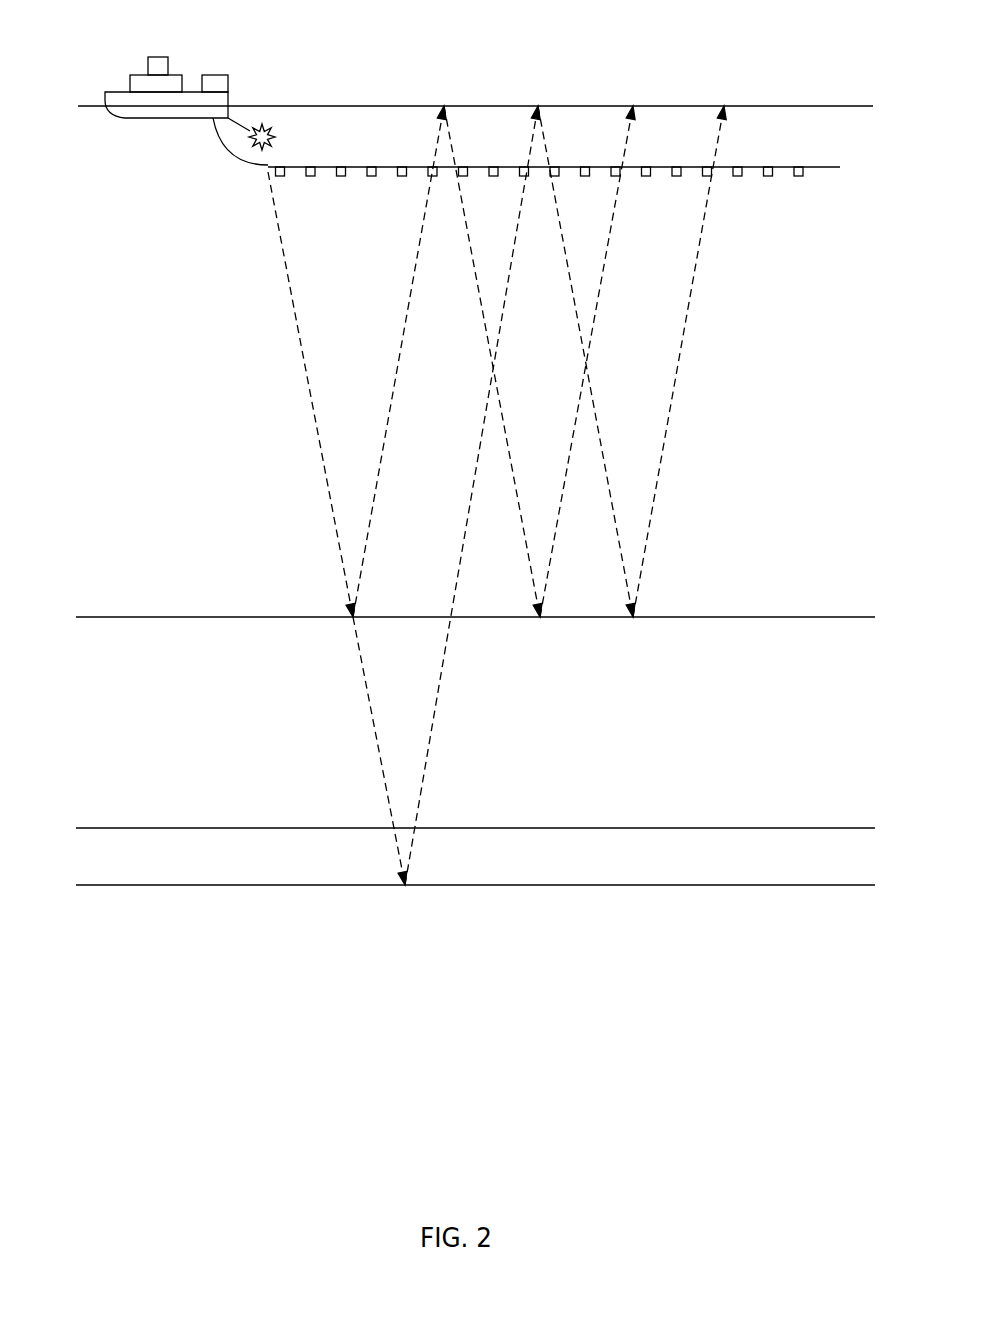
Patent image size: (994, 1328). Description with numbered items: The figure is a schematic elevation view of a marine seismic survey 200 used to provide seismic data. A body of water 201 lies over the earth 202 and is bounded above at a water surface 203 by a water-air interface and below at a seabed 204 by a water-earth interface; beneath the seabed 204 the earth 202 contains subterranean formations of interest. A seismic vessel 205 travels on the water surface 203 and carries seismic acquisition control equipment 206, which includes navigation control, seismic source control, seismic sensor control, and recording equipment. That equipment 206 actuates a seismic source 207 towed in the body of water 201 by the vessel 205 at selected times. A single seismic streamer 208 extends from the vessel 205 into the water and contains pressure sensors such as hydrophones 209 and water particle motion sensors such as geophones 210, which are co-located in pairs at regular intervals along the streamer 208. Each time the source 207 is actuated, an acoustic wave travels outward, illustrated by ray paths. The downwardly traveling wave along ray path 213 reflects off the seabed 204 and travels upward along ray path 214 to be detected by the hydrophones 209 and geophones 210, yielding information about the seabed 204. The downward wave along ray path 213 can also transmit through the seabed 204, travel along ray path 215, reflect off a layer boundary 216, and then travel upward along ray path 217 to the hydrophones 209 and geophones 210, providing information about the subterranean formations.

The marine seismic survey 200 is at (762, 52).
The body of water 201 is at (183, 390).
The earth 202 is at (188, 691).
The water surface 203 is at (568, 106).
The seabed 204 is at (168, 617).
The seismic vessel 205 is at (160, 57).
The seismic acquisition control equipment 206 is at (228, 77).
The seismic source 207 is at (272, 131).
The seismic streamer 208 is at (648, 167).
The hydrophones 209 is at (343, 167).
The geophones 210 is at (373, 167).
The ray path 213 is at (327, 470).
The ray path 214 is at (382, 475).
The ray path 215 is at (366, 680).
The layer boundary 216 is at (168, 885).
The ray path 217 is at (437, 710).